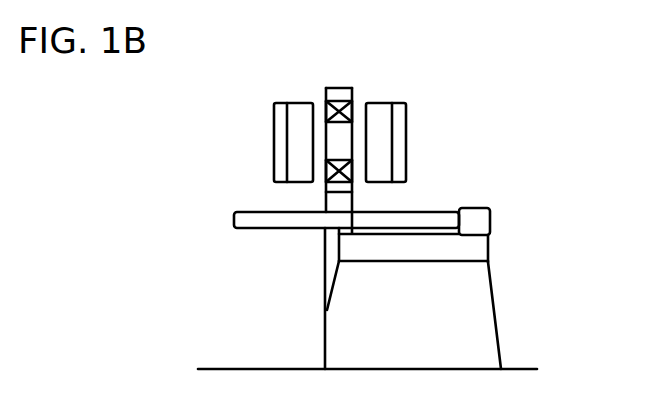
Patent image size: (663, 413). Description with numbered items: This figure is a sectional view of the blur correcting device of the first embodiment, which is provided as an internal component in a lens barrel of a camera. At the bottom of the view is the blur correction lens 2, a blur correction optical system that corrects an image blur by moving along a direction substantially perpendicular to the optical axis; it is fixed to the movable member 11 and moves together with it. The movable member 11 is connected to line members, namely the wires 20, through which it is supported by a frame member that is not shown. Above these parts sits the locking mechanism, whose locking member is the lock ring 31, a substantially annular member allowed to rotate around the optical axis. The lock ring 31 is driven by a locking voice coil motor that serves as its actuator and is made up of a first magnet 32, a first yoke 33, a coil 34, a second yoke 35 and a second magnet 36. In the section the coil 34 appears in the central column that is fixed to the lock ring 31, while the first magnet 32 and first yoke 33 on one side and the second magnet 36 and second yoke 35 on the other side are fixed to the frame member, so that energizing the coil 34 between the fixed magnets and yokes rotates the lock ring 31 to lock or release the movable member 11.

The blur correction lens 2 is at (485, 310).
The movable member 11 is at (483, 248).
The wires 20 is at (254, 204).
The lock ring 31 is at (342, 92).
The first magnet 32 is at (383, 103).
The first yoke 33 is at (405, 118).
The coil 34 is at (355, 104).
The second yoke 35 is at (275, 124).
The second magnet 36 is at (303, 108).